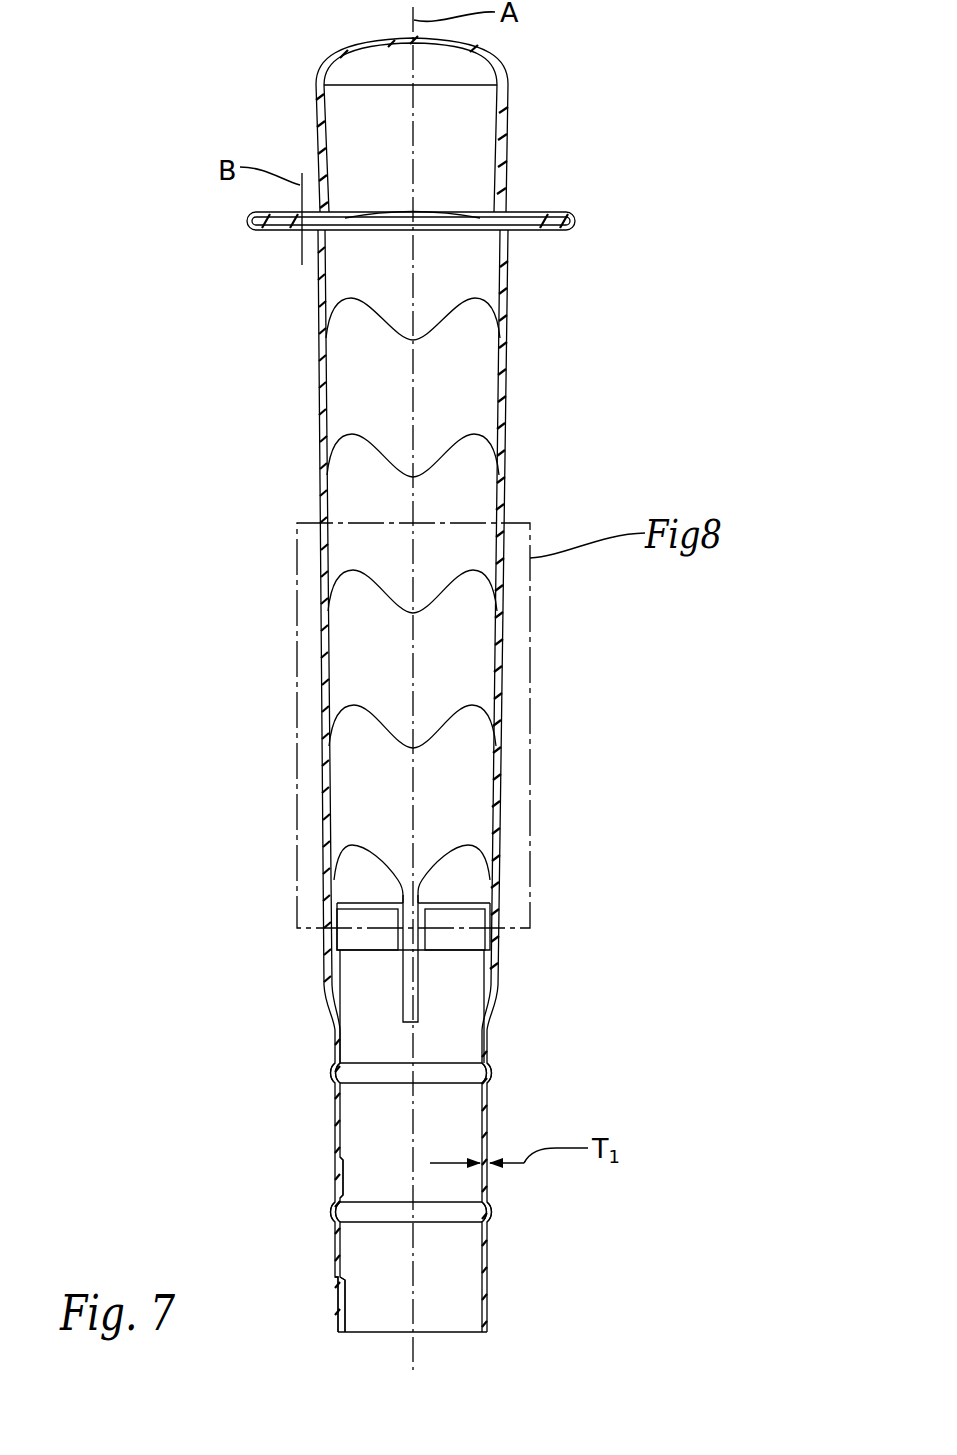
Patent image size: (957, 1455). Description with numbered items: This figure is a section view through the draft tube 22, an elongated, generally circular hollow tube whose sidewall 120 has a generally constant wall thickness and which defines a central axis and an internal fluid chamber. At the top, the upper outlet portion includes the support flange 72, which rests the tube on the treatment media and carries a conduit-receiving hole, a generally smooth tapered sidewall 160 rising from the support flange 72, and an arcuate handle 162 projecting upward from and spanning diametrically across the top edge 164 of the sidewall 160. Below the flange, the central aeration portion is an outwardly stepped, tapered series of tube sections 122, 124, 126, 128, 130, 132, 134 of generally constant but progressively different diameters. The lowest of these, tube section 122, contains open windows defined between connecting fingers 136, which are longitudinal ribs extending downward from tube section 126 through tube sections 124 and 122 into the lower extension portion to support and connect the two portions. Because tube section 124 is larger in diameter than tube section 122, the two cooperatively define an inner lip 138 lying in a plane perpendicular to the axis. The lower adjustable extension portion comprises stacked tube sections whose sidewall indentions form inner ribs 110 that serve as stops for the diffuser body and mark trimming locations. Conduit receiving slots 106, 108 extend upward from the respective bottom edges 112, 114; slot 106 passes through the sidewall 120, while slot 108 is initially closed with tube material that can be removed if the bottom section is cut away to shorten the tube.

The draft tube 22 is at (668, 47).
The support flange 72 is at (553, 212).
The conduit receiving slot 106 is at (342, 1310).
The conduit receiving slot 108 is at (337, 1185).
The inner rib 110 is at (476, 1088).
The bottom edge 112 is at (460, 1335).
The bottom edge 114 is at (459, 1202).
The sidewall 120 is at (504, 398).
The tube section 122 is at (510, 942).
The tube section 124 is at (459, 882).
The tube section 126 is at (512, 778).
The tube section 128 is at (290, 679).
The tube section 130 is at (290, 552).
The tube section 132 is at (288, 396).
The tube section 134 is at (290, 290).
The connecting finger 136 is at (403, 1012).
The inner lip 138 is at (334, 902).
The sidewall 160 is at (506, 131).
The arcuate handle 162 is at (482, 42).
The top edge 164 is at (472, 83).